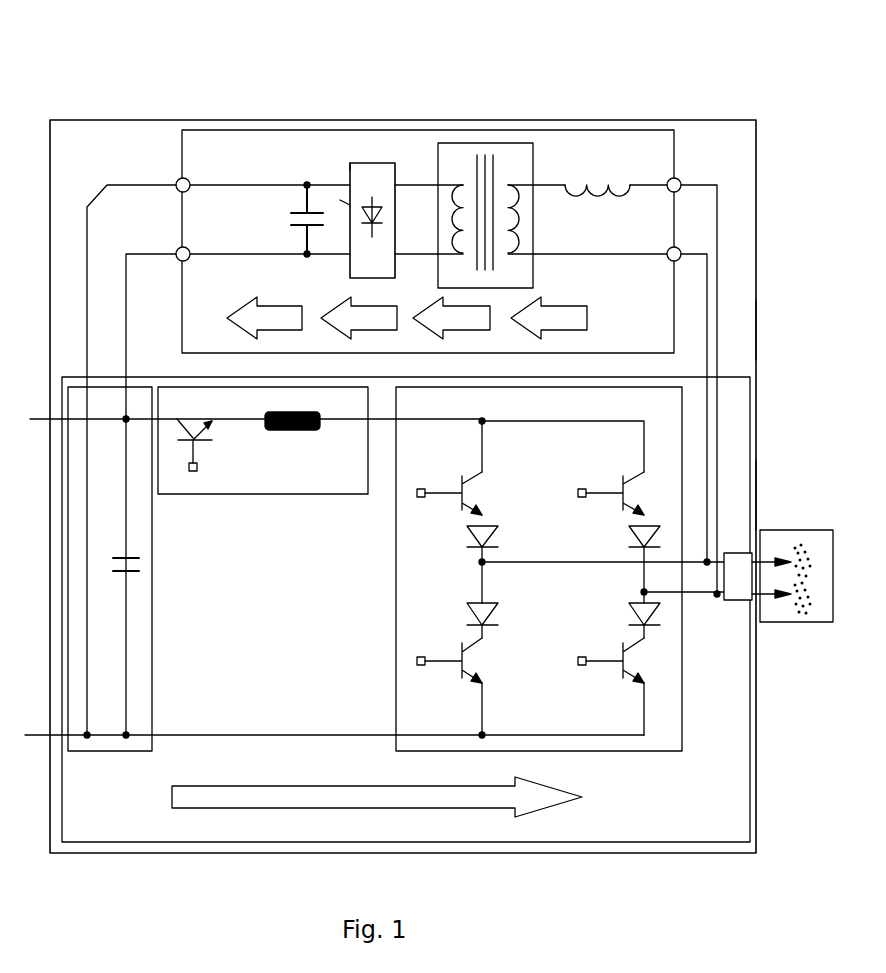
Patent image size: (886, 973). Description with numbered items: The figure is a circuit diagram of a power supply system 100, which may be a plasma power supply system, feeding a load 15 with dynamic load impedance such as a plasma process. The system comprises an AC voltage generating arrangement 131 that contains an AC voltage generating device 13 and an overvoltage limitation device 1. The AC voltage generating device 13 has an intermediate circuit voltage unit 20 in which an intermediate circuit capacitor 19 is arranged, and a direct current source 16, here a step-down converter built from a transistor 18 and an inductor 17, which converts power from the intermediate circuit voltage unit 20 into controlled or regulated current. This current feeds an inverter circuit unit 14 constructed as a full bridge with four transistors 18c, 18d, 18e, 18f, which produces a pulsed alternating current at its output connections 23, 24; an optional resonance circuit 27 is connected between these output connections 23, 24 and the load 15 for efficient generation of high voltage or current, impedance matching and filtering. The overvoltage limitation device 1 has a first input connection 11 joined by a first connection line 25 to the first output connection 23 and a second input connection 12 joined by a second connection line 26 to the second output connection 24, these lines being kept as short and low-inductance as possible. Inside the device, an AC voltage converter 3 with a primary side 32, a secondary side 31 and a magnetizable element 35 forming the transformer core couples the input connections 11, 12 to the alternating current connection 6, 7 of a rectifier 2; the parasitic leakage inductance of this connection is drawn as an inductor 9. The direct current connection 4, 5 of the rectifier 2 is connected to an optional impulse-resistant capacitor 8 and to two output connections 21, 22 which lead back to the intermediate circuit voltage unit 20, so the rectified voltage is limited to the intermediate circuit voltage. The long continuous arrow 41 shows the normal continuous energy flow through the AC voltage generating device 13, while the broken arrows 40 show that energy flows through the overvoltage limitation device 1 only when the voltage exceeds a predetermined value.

The power supply system 100 is at (676, 44).
The overvoltage limitation device 1 is at (200, 130).
The rectifier 2 is at (395, 268).
The AC voltage converter 3 is at (516, 176).
The direct current connection 4 is at (340, 200).
The direct current connection 5 is at (350, 165).
The alternating current connection 6 is at (400, 183).
The alternating current connection 7 is at (400, 252).
The impulse-resistant capacitor 8 is at (285, 222).
The inductor 9 is at (600, 185).
The first input connection 11 is at (681, 182).
The second input connection 12 is at (680, 252).
The AC voltage generating device 13 is at (732, 377).
The AC voltage generating arrangement 131 is at (756, 330).
The inverter circuit unit 14 is at (517, 569).
The load 15 is at (763, 623).
The direct current source 16 is at (263, 457).
The inductor 17 is at (273, 430).
The transistor 18 is at (198, 445).
The transistor 18c is at (641, 480).
The transistor 18d is at (632, 674).
The transistor 18e is at (480, 480).
The transistor 18f is at (478, 648).
The intermediate circuit capacitor 19 is at (140, 573).
The intermediate circuit voltage unit 20 is at (334, 569).
The first output connection 21 is at (176, 183).
The second output connection 22 is at (176, 252).
The first output connection 23 is at (718, 596).
The second output connection 24 is at (757, 520).
The first connection line 25 is at (717, 277).
The second connection line 26 is at (710, 445).
The resonance circuit 27 is at (710, 560).
The secondary side 31 is at (465, 185).
The primary side 32 is at (508, 185).
The magnetizable element 35 is at (493, 262).
The arrows 40 is at (258, 298).
The arrow 41 is at (562, 807).